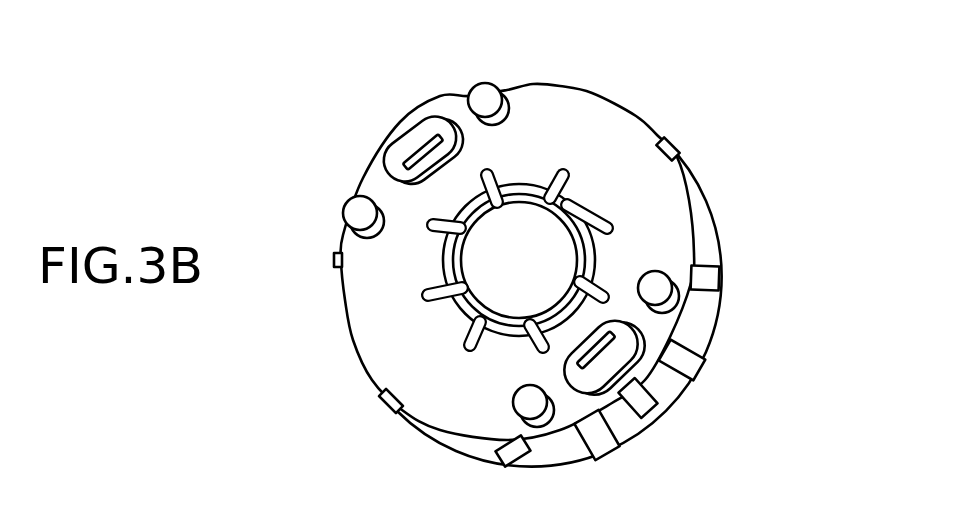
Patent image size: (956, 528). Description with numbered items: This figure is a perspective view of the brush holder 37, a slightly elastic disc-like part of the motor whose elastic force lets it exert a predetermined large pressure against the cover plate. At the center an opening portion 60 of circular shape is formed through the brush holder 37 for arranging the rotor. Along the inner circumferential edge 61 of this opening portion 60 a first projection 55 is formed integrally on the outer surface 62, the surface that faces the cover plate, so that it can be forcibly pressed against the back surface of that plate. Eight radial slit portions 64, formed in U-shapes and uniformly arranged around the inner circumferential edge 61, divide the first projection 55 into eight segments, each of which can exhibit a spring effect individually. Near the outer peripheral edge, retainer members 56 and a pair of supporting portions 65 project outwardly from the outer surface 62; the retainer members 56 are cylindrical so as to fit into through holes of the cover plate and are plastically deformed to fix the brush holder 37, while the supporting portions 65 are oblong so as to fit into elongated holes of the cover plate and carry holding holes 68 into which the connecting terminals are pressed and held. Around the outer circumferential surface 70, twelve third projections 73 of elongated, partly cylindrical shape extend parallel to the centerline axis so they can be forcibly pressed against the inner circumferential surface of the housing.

The brush holder 37 is at (748, 180).
The first projection 55 is at (587, 205).
The retainer members 56 is at (485, 92).
The opening portion 60 is at (522, 275).
The inner circumferential edge 61 is at (468, 312).
The outer surface 62 is at (431, 361).
The radial slit portions 64 is at (466, 234).
The supporting portions 65 is at (468, 153).
The holding holes 68 is at (424, 143).
The outer circumferential surface 70 is at (707, 240).
The third projections 73 is at (705, 263).